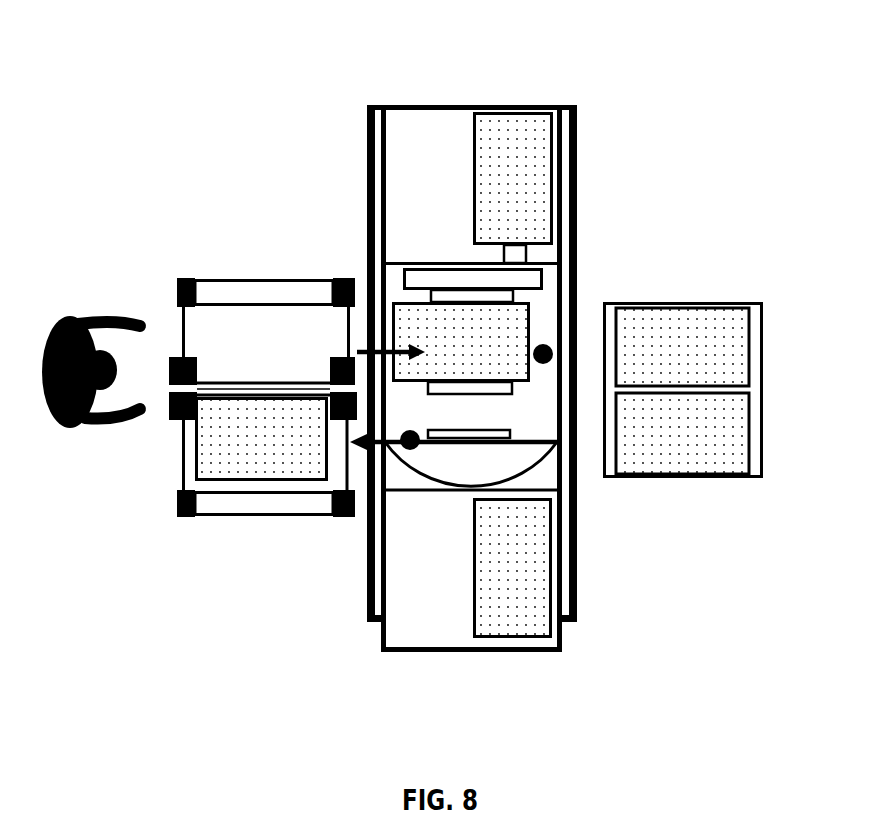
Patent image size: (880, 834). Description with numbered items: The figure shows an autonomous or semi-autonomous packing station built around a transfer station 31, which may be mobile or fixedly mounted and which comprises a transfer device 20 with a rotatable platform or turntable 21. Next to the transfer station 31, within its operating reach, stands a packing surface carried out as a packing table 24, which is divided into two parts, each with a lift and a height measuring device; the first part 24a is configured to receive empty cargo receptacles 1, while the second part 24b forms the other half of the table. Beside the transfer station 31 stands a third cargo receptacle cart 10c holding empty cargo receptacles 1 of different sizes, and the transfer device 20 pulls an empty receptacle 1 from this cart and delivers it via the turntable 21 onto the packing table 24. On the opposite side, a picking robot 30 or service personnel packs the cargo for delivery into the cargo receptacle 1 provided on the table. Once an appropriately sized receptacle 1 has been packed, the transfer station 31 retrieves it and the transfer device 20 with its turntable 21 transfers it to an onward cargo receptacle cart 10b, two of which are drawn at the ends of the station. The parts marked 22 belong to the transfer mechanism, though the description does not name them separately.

The cargo receptacle 1 is at (483, 577).
The onward cargo receptacle cart 10b is at (535, 107).
The third cargo receptacle cart 10c is at (750, 393).
The transfer device 20 is at (553, 460).
The turntable 21 is at (540, 312).
The pusher mechanism 22 is at (546, 344).
The packing table 24 is at (263, 397).
The first part of the packing table 24a is at (270, 482).
The upper cart stage 24b is at (265, 338).
The picking robot 30 is at (68, 313).
The transfer station 31 is at (437, 100).